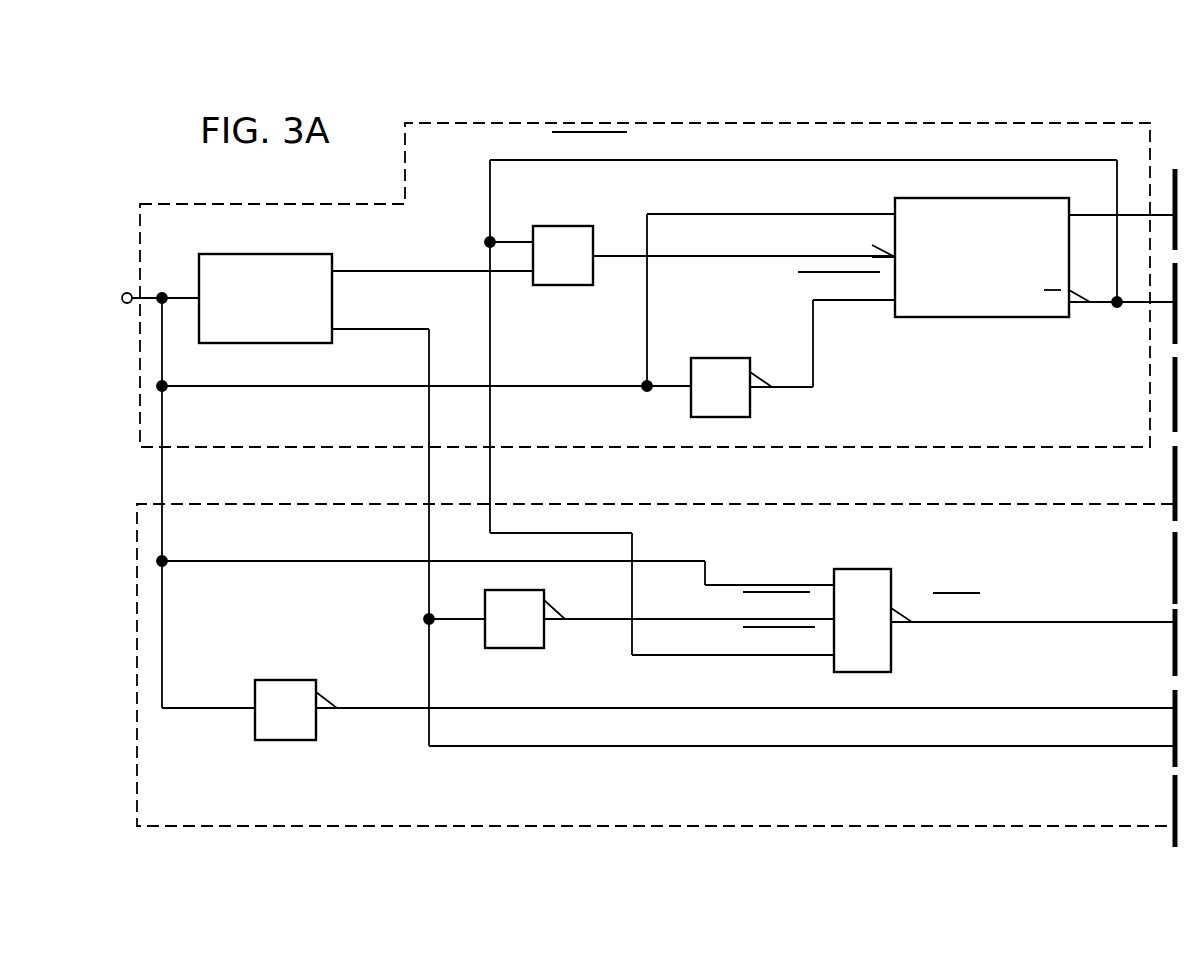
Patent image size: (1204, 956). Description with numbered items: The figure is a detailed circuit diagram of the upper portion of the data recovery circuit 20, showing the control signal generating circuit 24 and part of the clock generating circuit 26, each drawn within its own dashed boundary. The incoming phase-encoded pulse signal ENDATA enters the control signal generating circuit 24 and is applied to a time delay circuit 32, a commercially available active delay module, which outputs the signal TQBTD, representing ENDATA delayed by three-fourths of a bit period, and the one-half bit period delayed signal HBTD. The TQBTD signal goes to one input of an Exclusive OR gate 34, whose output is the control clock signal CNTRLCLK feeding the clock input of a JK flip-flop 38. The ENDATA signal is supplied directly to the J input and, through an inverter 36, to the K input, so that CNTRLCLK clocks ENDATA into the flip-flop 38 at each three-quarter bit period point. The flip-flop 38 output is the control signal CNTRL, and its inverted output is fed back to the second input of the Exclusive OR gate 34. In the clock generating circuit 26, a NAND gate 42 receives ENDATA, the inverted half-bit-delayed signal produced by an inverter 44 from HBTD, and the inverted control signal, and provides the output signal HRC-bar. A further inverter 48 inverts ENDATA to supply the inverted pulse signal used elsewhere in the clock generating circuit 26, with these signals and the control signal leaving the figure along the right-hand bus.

The data recovery circuit 20 is at (151, 177).
The control signal generating circuit 24 is at (265, 202).
The clock generating circuit 26 is at (137, 504).
The time delay circuit 32 is at (258, 254).
The Exclusive OR gate 34 is at (580, 225).
The inverter 36 is at (725, 357).
The JK flip-flop 38 is at (993, 318).
The NAND gate 42 is at (858, 568).
The inverter 44 is at (528, 649).
The inverter 48 is at (284, 680).